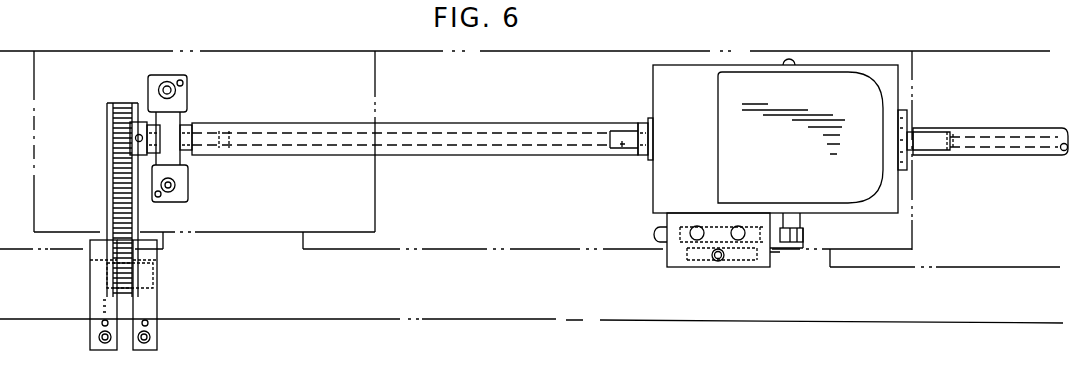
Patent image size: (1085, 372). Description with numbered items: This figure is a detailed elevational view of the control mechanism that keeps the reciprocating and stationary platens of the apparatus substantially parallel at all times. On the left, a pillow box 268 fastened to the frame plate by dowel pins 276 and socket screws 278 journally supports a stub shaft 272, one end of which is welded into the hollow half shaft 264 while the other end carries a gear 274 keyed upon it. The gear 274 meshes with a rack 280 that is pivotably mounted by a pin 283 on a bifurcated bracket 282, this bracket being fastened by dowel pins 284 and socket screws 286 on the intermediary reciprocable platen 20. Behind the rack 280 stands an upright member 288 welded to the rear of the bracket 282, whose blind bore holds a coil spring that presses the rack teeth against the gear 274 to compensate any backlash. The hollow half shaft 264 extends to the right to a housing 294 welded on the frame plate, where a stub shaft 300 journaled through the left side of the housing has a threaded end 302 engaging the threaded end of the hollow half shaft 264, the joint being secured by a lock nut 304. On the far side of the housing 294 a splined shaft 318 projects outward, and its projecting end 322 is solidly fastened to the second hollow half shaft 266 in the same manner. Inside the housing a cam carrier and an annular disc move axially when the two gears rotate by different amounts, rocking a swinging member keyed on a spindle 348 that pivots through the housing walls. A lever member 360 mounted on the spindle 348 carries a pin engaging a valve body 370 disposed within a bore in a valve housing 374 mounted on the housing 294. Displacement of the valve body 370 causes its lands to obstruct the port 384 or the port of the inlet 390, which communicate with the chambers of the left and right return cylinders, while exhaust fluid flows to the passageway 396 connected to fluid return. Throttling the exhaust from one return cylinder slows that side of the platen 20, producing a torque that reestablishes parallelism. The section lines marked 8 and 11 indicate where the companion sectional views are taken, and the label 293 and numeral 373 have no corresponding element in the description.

The section line 8- 8 is at (118, 79).
The section line 11- 11 is at (902, 227).
The intermediary reciprocable platen 20 is at (460, 318).
The hollow half shaft 264 is at (525, 123).
The hollow half shaft 266 is at (1025, 128).
The pillow box 268 is at (183, 90).
The stub shaft 272 is at (185, 135).
The gear 274 is at (123, 119).
The dowel pins 276 is at (180, 202).
The socket screws 278 is at (181, 188).
The rack 280 is at (125, 210).
The bifurcated bracket 282 is at (105, 298).
The pin 283 is at (155, 285).
The dowel pins 284 is at (148, 323).
The socket screws 286 is at (103, 325).
The upright member 288 is at (108, 180).
The motor assembly 293 is at (928, 6).
The housing 294 is at (757, 58).
The stub shaft 300 is at (648, 168).
The threaded end 302 is at (625, 150).
The lock nut 304 is at (643, 122).
The splined shaft 318 is at (915, 128).
The projecting end 322 is at (930, 152).
The spindle 348 is at (790, 218).
The lever member 360 is at (805, 238).
The valve body 370 is at (770, 255).
The gearbox housing 373 is at (705, 272).
The valve housing 374 is at (673, 268).
The port 384 is at (695, 225).
The inlet 390 is at (742, 226).
The passageway 396 is at (722, 262).